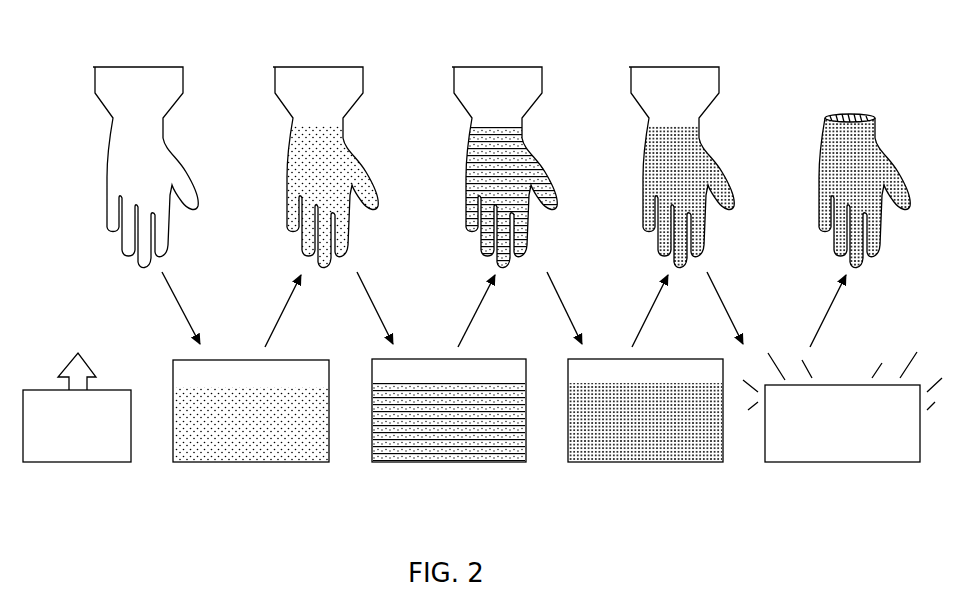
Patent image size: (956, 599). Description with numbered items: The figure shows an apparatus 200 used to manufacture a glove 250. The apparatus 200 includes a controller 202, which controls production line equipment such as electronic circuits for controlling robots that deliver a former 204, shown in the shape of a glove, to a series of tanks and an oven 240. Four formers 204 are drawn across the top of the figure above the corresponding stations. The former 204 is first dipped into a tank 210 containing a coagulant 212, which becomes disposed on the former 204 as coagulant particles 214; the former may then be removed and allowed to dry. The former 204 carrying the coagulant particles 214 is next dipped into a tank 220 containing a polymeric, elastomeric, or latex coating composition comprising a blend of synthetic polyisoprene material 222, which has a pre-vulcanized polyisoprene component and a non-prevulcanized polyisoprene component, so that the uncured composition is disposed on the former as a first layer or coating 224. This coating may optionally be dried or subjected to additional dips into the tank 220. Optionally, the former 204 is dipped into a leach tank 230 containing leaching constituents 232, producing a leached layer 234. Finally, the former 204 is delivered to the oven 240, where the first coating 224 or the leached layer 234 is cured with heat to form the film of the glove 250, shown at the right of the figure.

The apparatus 200 is at (846, 38).
The controller 202 is at (78, 462).
The former 204 is at (173, 77).
The tank 210 is at (251, 437).
The coagulant 212 is at (210, 452).
The coagulant particles 214 is at (338, 148).
The tank 220 is at (449, 436).
The synthetic polyisoprene material 222 is at (407, 452).
The first layer or coating 224 is at (522, 148).
The leach tank 230 is at (645, 436).
The leaching constituents 232 is at (603, 462).
The leached layer 234 is at (700, 148).
The oven 240 is at (843, 462).
The glove 250 is at (861, 95).